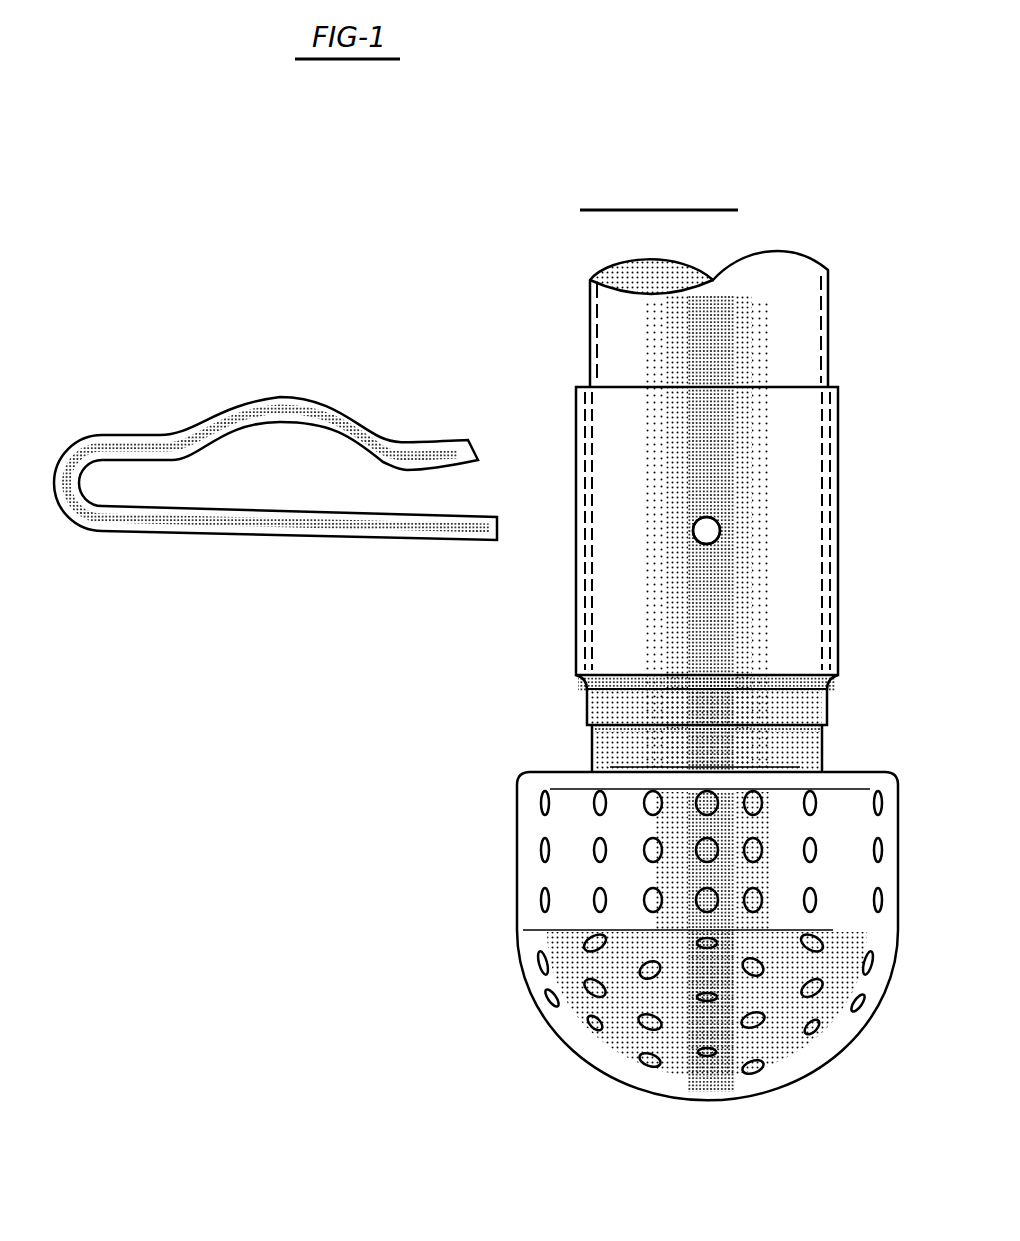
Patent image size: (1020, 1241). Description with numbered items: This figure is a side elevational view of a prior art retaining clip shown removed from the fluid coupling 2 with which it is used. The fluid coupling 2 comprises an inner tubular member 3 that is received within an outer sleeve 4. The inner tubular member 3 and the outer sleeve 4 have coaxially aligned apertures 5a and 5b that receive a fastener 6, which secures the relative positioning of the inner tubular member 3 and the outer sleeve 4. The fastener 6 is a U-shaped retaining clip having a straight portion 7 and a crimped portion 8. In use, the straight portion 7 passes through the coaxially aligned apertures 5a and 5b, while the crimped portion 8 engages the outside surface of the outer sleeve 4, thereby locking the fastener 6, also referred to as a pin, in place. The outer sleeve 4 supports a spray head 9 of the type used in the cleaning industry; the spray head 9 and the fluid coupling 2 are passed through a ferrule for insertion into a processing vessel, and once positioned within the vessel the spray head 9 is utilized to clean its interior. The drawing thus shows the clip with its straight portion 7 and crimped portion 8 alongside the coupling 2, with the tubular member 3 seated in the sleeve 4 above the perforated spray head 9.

The fluid coupling 2 is at (500, 653).
The inner tubular member 3 is at (829, 308).
The outer sleeve 4 is at (839, 470).
The aperture 5a is at (694, 524).
The aperture 5b is at (721, 531).
The fastener 6 is at (270, 368).
The straight portion 7 is at (300, 536).
The crimped portion 8 is at (360, 420).
The spray head 9 is at (517, 877).